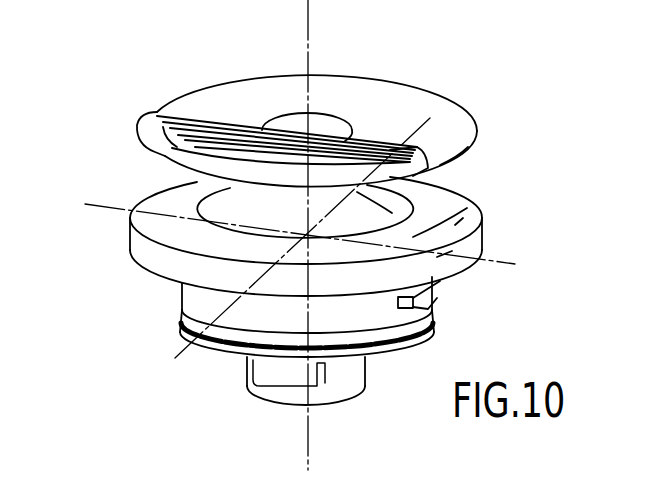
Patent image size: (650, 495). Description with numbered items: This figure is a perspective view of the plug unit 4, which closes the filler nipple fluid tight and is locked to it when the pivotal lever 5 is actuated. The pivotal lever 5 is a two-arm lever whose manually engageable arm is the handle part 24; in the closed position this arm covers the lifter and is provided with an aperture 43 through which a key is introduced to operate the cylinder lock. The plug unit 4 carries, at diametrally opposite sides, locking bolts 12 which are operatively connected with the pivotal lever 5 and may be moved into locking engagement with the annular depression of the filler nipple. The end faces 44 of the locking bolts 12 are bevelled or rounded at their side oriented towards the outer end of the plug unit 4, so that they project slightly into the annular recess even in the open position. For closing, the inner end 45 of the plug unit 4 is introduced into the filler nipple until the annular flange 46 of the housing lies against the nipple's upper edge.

The plug unit 4 is at (160, 300).
The pivotal lever 5 is at (215, 116).
The locking bolt 12 is at (457, 287).
The handle part 24 is at (166, 146).
The aperture 43 is at (325, 128).
The end face 44 is at (417, 300).
The inner end 45 is at (288, 410).
The annular flange 46 is at (492, 256).